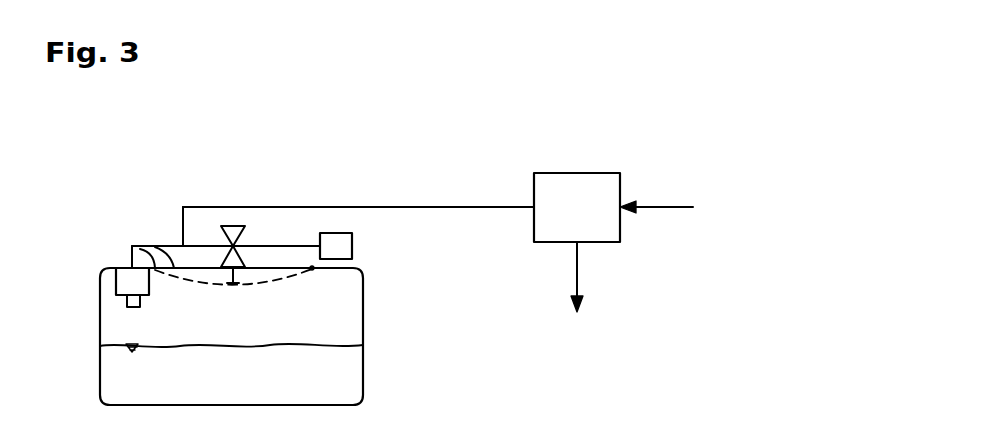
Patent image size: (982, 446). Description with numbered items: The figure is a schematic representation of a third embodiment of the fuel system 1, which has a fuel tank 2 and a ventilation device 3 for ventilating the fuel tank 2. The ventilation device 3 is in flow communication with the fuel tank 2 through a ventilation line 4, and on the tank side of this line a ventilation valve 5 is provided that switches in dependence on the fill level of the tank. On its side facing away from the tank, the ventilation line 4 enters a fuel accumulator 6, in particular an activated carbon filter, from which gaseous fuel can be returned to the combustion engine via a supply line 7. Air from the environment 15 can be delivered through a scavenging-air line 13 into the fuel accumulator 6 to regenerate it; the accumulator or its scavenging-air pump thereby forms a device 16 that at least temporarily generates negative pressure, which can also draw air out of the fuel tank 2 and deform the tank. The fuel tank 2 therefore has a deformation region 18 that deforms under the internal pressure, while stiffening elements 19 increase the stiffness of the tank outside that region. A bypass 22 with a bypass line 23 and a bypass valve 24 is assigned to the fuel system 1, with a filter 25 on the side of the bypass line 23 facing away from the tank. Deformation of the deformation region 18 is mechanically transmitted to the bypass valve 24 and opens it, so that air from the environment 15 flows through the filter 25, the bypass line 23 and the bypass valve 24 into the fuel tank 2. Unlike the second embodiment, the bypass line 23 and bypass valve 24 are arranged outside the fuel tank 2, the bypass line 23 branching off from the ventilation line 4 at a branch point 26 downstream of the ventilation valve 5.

The fuel system 1 is at (371, 161).
The fuel tank 2 is at (127, 367).
The ventilation device 3 is at (182, 191).
The ventilation line 4 is at (276, 207).
The ventilation valve 5 is at (116, 285).
The fuel accumulator 6 is at (577, 173).
The supply line 7 is at (577, 268).
The scavenging-air line 13 is at (665, 207).
The environment 15 is at (722, 258).
The device generating negative pressure 16 is at (634, 150).
The deformation region 18 is at (153, 262).
The stiffening elements 19 is at (132, 249).
The bypass 22 is at (224, 221).
The bypass line 23 is at (310, 246).
The bypass valve 24 is at (229, 224).
The filter 25 is at (352, 246).
The branch point 26 is at (180, 245).